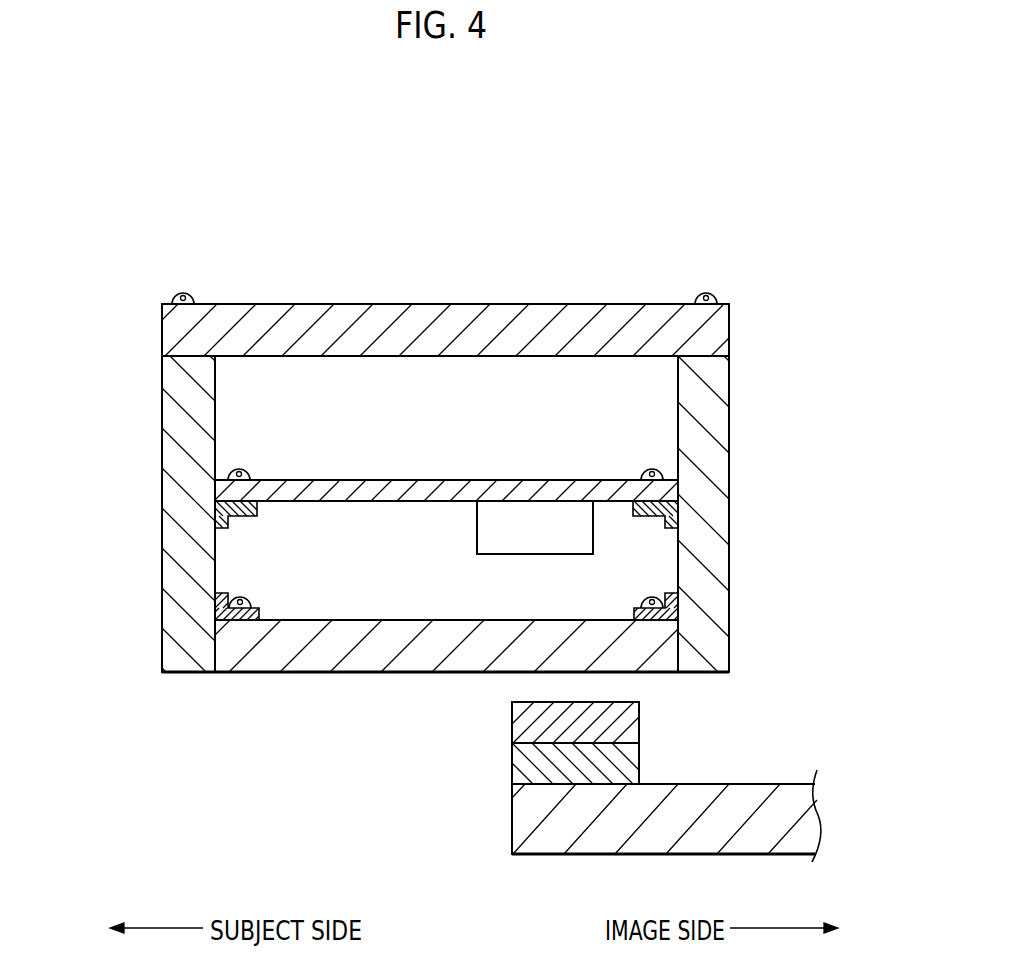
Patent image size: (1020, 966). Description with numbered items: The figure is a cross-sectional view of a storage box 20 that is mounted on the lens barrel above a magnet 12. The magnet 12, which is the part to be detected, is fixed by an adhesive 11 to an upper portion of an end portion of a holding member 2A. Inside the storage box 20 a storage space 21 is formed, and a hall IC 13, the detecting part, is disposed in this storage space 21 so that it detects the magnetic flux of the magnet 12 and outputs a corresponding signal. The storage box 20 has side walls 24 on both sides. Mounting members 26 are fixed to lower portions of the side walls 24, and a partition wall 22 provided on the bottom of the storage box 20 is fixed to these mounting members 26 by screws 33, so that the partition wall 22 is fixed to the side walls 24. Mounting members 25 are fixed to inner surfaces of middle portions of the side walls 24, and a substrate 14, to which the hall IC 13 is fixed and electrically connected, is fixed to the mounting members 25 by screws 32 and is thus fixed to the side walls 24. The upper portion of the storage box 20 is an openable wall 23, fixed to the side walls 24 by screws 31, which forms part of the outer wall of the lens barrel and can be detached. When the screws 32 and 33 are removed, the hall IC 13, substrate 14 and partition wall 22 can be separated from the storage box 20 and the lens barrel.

The storage box 20 is at (732, 386).
The storage space 21 is at (668, 428).
The partition wall 22 is at (358, 657).
The openable wall 23 is at (436, 320).
The side walls 24 is at (177, 540).
The mounting members 25 is at (227, 528).
The mounting members 26 is at (262, 614).
The screws 31 is at (180, 293).
The screws 32 is at (246, 470).
The screws 33 is at (241, 598).
The substrate 14 is at (438, 487).
The hall IC 13 is at (510, 556).
The magnet 12 is at (632, 728).
The adhesive 11 is at (625, 765).
The holding member 2A is at (543, 842).